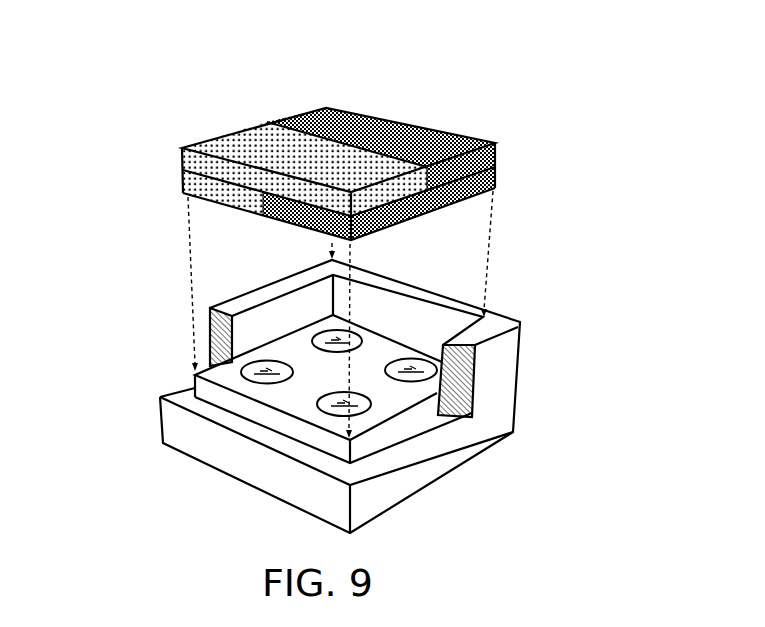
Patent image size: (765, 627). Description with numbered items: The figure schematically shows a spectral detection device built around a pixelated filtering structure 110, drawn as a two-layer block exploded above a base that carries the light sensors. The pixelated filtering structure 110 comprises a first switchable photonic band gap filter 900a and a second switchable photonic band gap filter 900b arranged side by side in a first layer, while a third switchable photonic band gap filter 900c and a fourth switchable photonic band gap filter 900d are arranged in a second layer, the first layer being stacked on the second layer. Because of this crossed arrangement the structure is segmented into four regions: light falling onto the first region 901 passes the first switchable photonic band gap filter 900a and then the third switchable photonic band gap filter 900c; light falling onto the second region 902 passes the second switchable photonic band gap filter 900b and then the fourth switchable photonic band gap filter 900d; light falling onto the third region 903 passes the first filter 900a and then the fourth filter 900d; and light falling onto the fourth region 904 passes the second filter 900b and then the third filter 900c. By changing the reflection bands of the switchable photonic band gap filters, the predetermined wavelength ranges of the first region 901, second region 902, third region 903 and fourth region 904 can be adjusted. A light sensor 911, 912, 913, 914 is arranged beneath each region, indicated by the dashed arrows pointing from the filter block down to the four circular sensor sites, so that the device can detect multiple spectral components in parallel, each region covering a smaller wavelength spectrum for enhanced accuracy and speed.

The pixelated filtering structure 110 is at (556, 98).
The first region 901 is at (251, 145).
The second region 902 is at (447, 133).
The third region 903 is at (355, 172).
The fourth region 904 is at (318, 118).
The first switchable photonic band gap filter 900a is at (427, 192).
The second switchable photonic band gap filter 900b is at (393, 190).
The third switchable photonic band gap filter 900c is at (207, 186).
The fourth switchable photonic band gap filter 900d is at (278, 218).
The light sensor 911 is at (247, 381).
The light sensor 912 is at (418, 373).
The light sensor 913 is at (327, 413).
The light sensor 914 is at (313, 340).